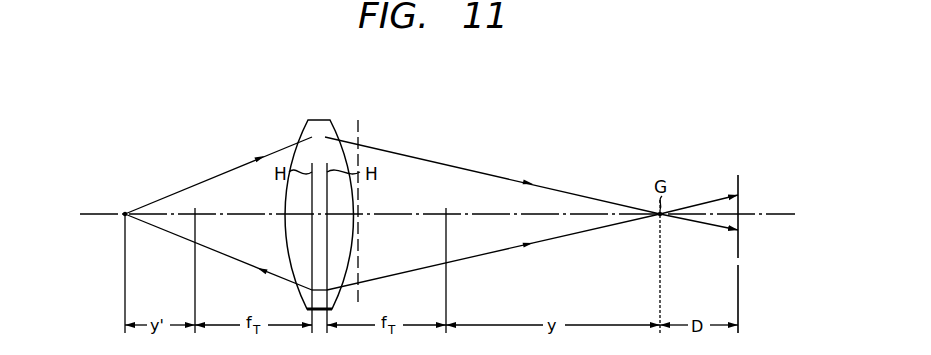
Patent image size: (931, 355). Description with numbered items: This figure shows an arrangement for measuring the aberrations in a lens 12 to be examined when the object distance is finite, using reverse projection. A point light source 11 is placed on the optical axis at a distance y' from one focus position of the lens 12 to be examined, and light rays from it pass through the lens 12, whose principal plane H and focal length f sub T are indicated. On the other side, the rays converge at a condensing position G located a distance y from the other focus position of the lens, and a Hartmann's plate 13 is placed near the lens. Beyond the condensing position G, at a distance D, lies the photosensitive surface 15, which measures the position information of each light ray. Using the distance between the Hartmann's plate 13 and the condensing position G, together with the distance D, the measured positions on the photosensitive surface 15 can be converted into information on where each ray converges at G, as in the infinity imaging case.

The point light source 11 is at (125, 213).
The lens to be examined 12 is at (319, 120).
The Hartmann's plate 13 is at (360, 119).
The photosensitive surface 15 is at (740, 178).